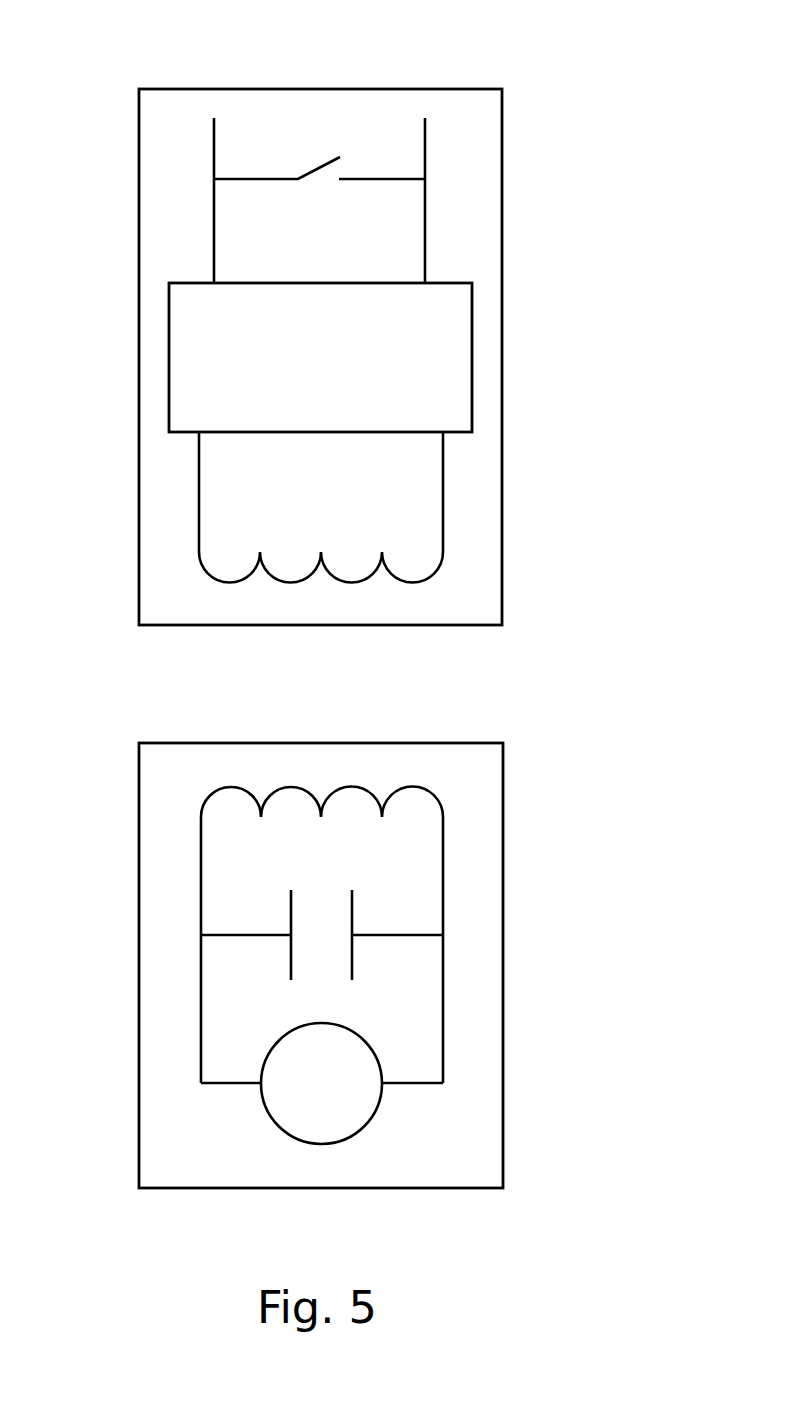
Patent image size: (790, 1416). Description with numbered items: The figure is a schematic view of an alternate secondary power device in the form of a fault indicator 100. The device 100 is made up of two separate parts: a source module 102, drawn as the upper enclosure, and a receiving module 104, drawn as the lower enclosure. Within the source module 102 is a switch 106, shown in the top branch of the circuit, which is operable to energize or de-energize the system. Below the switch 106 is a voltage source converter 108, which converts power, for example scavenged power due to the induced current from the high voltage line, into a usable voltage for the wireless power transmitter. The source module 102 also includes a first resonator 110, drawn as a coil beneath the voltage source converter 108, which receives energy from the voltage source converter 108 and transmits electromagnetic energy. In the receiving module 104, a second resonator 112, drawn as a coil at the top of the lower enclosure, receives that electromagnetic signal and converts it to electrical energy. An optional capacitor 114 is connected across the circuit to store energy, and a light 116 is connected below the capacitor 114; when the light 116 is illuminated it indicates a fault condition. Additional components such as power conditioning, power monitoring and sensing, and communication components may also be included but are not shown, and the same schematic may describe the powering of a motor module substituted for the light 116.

The fault indicator 100 is at (579, 658).
The source module 102 is at (502, 133).
The receiving module 104 is at (503, 840).
The switch 106 is at (318, 168).
The voltage source converter 108 is at (472, 319).
The first resonator 110 is at (217, 582).
The second resonator 112 is at (298, 787).
The capacitor 114 is at (242, 936).
The light 116 is at (365, 1125).